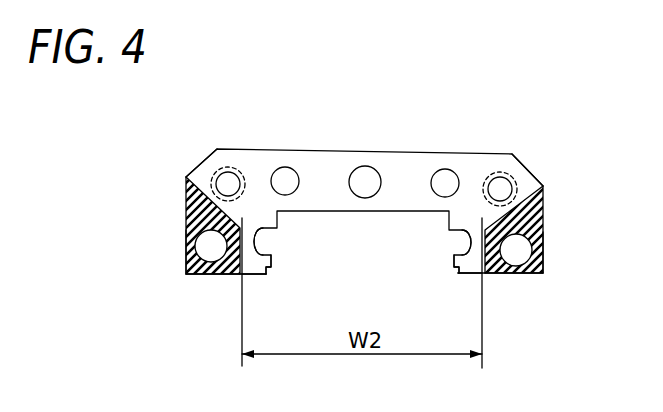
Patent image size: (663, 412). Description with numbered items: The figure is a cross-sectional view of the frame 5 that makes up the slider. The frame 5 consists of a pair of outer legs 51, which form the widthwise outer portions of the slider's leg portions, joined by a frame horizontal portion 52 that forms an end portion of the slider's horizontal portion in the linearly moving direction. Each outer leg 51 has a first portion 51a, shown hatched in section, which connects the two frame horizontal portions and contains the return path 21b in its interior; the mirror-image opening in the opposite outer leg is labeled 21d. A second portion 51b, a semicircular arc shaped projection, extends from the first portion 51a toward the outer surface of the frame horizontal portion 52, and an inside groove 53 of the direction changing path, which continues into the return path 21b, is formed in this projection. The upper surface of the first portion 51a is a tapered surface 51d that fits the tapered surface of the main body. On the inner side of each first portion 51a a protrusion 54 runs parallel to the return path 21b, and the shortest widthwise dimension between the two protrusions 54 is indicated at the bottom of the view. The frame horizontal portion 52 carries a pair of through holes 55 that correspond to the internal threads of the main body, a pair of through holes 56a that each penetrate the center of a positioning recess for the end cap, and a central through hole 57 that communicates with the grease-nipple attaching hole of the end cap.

The frame 5 is at (492, 142).
The frame horizontal portion 52 is at (328, 160).
The through holes 55 is at (285, 176).
The through hole 57 is at (365, 178).
The through holes 56a is at (234, 175).
The tapered surface 51d is at (190, 174).
The return path 21b is at (207, 237).
The right guide rod hole 21d is at (520, 247).
The protrusion 54 is at (262, 230).
The inside groove 53 is at (271, 255).
The first portion 51a is at (187, 276).
The second portion 51b is at (268, 276).
The outer leg 51 is at (207, 286).